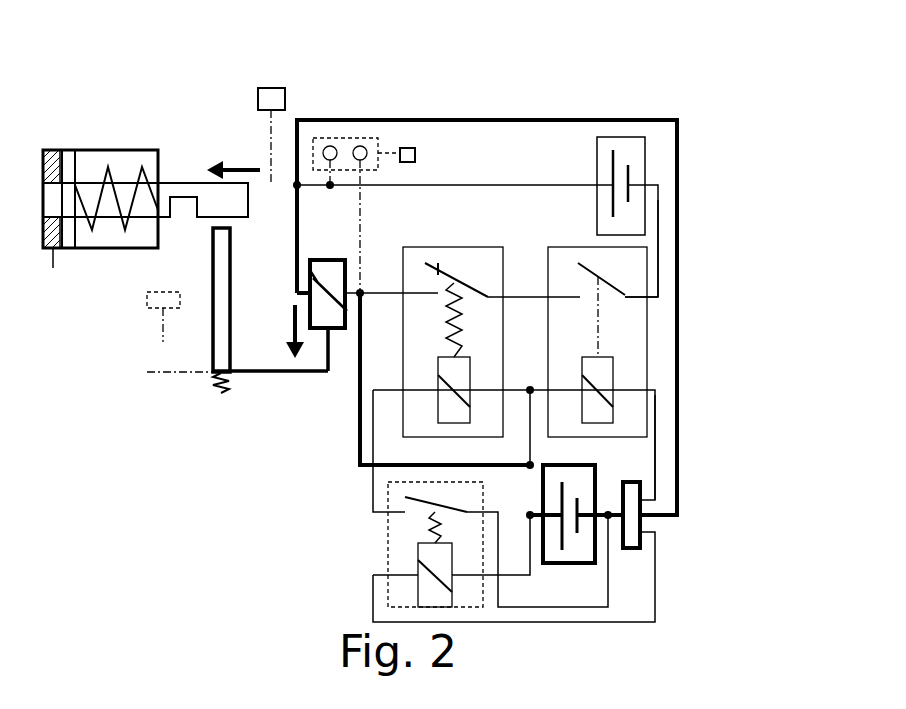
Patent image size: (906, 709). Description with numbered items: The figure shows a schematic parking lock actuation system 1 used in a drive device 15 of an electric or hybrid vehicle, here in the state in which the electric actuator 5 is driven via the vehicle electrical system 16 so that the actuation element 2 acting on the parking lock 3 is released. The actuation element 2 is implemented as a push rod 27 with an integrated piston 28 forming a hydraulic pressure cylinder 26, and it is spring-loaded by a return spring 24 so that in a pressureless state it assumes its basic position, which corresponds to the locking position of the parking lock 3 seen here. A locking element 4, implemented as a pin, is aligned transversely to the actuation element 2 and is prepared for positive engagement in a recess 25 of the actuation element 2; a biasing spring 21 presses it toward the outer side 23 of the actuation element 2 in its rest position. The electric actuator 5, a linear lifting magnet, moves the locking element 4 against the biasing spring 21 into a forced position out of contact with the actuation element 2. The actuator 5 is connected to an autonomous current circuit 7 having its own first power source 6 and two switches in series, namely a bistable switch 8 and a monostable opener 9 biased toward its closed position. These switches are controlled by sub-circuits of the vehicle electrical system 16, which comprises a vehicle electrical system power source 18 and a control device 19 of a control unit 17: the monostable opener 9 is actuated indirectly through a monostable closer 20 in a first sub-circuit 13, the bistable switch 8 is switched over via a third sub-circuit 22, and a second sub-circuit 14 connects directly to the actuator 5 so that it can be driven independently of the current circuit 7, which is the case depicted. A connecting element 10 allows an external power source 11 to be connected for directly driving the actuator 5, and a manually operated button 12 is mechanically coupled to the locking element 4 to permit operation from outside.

The parking lock actuation system 1 is at (171, 88).
The actuation element 2 is at (145, 165).
The push rod 27 is at (165, 193).
The parking lock 3 is at (271, 88).
The locking element 4 is at (222, 276).
The electric actuator 5 is at (326, 297).
The first power source 6 is at (645, 155).
The current circuit 7 is at (660, 253).
The bistable switch 8 is at (638, 335).
The monostable opener 9 is at (485, 262).
The connecting element 10 is at (345, 140).
The external power source 11 is at (418, 157).
The button 12 is at (156, 292).
The first sub-circuit 13 is at (373, 478).
The second sub-circuit 14 is at (505, 120).
The drive device 15 is at (708, 114).
The vehicle electrical system 16 is at (693, 513).
The control unit 17 is at (680, 537).
The vehicle electrical system power source 18 is at (595, 547).
The control device 19 is at (630, 493).
The monostable closer 20 is at (402, 547).
The biasing spring 21 is at (218, 391).
The third sub-circuit 22 is at (657, 410).
The outer side 23 is at (202, 222).
The return spring 24 is at (108, 167).
The recess 25 is at (171, 216).
The hydraulic pressure cylinder 26 is at (55, 150).
The piston 28 is at (72, 238).